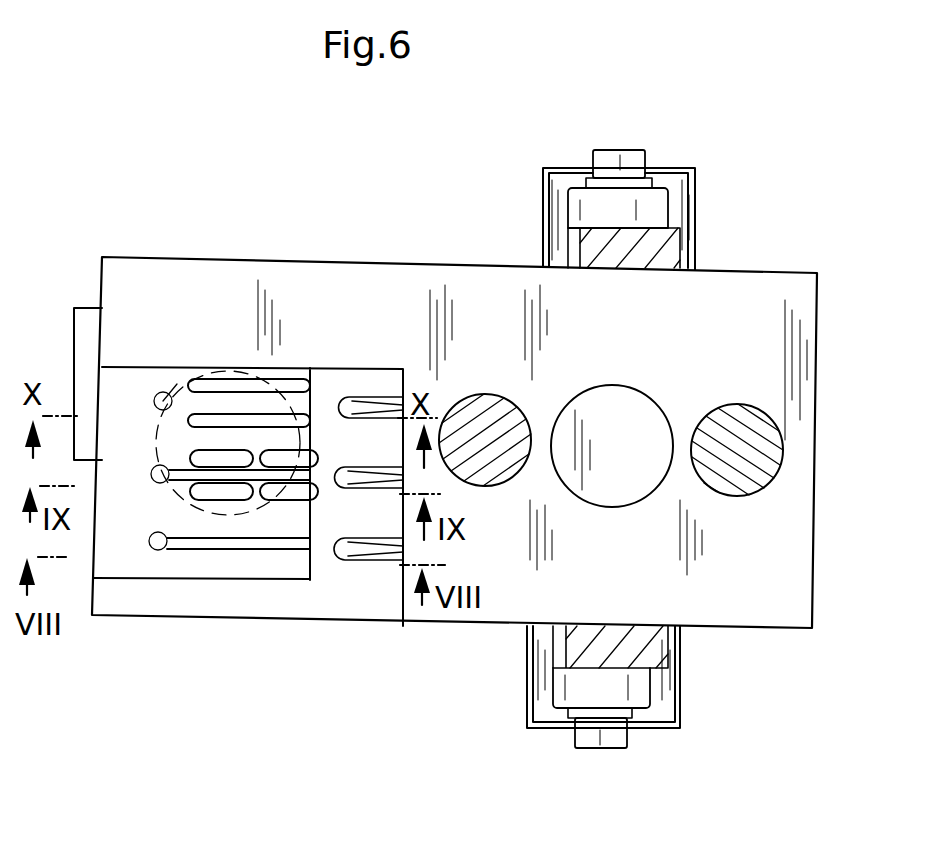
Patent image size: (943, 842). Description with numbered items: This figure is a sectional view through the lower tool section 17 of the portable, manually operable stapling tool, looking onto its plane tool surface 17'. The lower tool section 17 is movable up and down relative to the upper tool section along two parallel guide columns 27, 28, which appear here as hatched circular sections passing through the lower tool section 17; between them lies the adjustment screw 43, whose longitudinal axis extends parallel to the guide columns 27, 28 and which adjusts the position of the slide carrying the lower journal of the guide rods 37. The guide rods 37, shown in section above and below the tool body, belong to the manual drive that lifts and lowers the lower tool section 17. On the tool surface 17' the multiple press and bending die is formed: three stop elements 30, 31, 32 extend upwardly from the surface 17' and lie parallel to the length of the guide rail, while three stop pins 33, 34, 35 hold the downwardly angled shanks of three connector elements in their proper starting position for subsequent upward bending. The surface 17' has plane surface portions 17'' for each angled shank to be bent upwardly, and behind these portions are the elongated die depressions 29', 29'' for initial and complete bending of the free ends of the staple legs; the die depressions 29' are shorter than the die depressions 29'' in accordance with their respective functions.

The lower tool section 17 is at (445, 482).
The surface of the lower tool section 17' is at (191, 621).
The plane surface portions 17'' is at (266, 600).
The guide column 27 is at (483, 412).
The guide column 28 is at (741, 430).
The die depressions 29' is at (237, 538).
The die depressions 29'' is at (231, 364).
The stop element 30 is at (342, 562).
The stop element 31 is at (340, 465).
The stop element 32 is at (346, 398).
The stop pin 33 is at (157, 552).
The stop pin 34 is at (156, 468).
The stop pin 35 is at (158, 394).
The guide rod 37 is at (652, 655).
The adjustment screw 43 is at (621, 397).